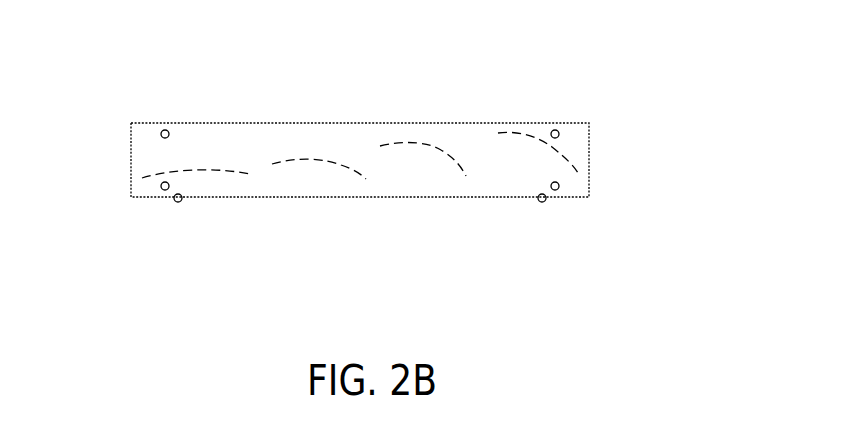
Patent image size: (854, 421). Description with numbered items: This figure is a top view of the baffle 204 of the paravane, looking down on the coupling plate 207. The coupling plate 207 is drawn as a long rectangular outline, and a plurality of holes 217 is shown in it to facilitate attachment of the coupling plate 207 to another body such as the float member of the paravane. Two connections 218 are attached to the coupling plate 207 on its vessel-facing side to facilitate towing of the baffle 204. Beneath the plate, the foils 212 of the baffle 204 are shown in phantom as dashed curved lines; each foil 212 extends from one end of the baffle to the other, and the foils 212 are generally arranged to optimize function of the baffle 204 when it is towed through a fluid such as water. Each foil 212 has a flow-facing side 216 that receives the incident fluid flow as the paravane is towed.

The baffle 204 is at (600, 83).
The coupling plate 207 is at (235, 123).
The foils 212 is at (437, 150).
The flow-facing side 216 is at (345, 167).
The holes 217 is at (161, 189).
The connections 218 is at (176, 202).